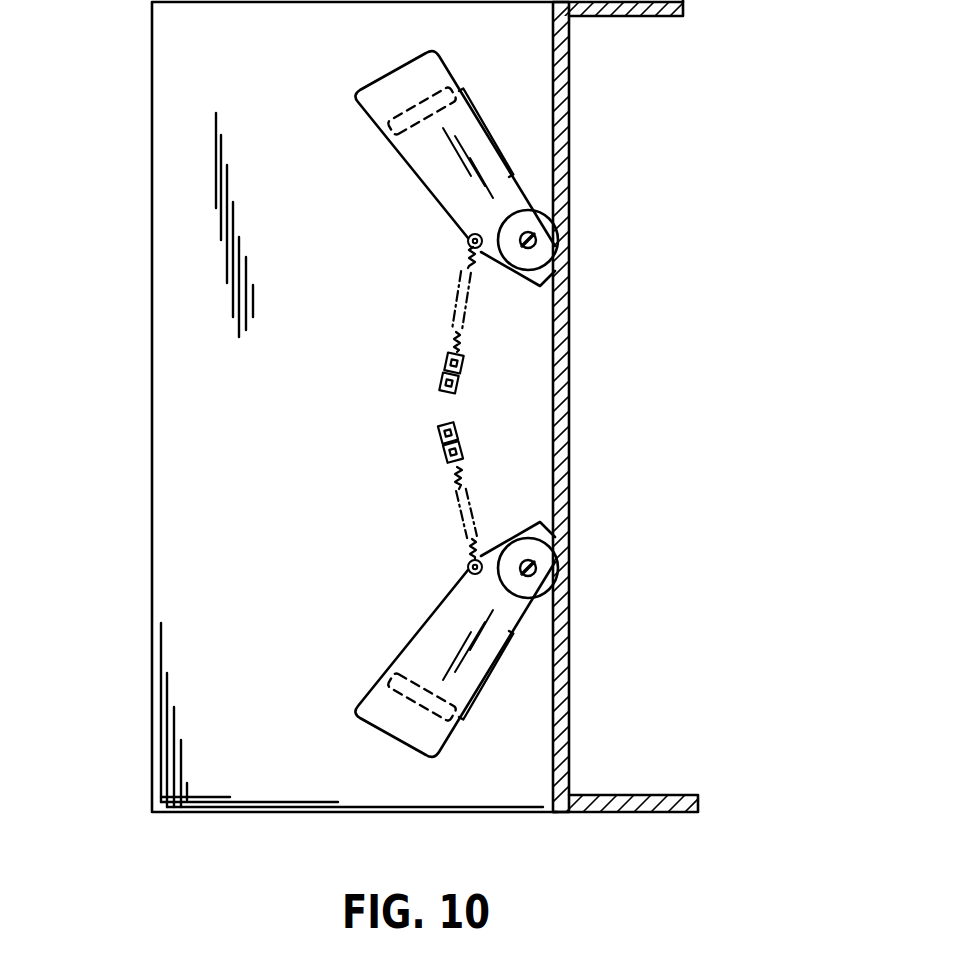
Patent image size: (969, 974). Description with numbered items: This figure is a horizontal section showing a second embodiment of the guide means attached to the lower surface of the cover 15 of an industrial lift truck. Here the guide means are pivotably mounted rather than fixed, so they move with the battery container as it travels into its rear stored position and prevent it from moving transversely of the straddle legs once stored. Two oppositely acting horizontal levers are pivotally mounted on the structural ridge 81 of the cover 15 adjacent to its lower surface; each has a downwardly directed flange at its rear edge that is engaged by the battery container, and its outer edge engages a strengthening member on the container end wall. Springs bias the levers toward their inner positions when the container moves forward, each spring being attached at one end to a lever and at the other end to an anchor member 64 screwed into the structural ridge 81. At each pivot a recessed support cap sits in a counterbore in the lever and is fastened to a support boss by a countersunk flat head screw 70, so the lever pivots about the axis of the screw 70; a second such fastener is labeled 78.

The cover 15 is at (130, 411).
The structural ridge 81 is at (172, 333).
The anchor member 64 is at (440, 424).
The countersunk flat head screw 70 is at (540, 240).
The pivot screw 78 is at (537, 568).